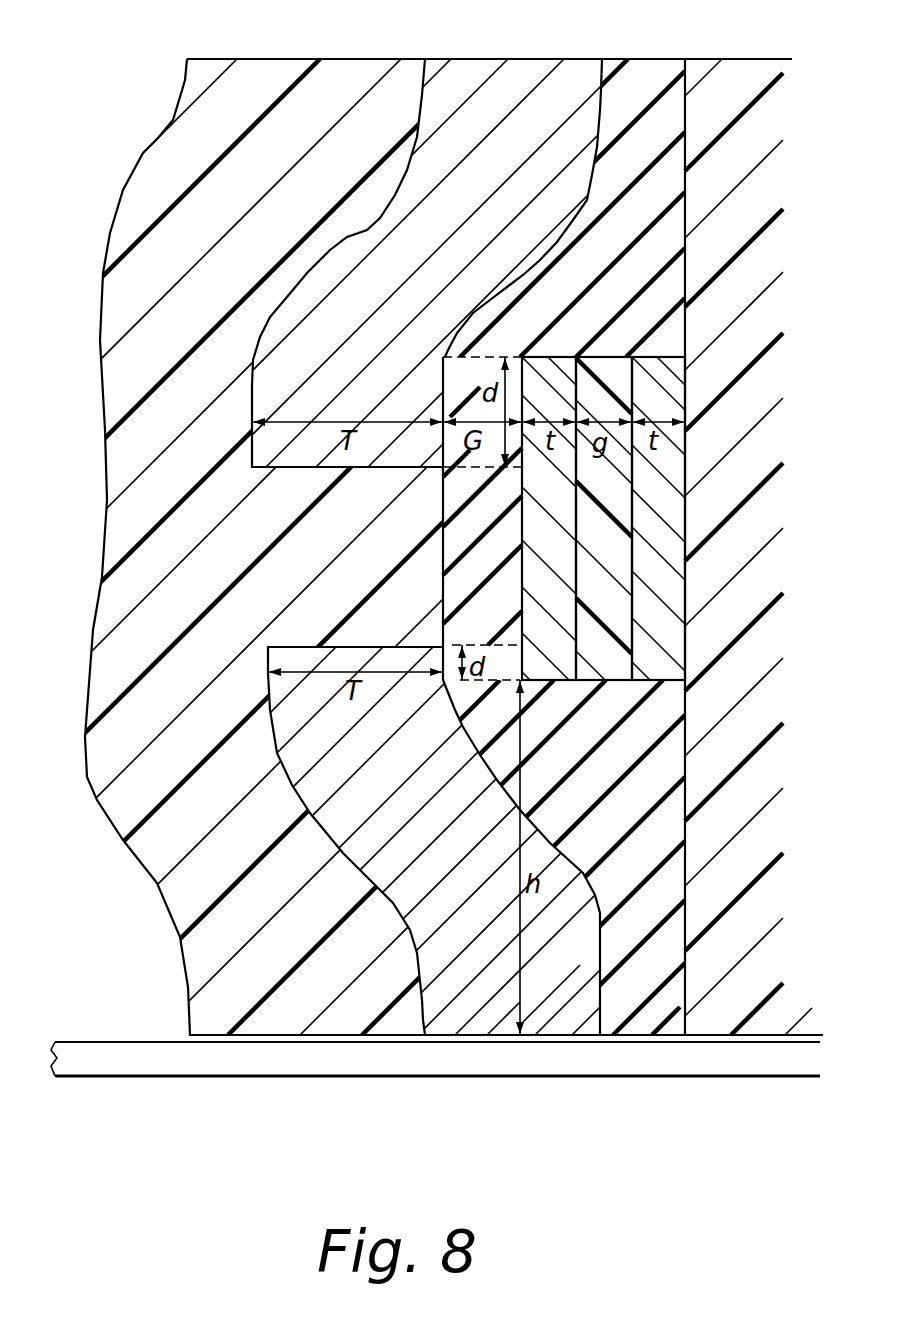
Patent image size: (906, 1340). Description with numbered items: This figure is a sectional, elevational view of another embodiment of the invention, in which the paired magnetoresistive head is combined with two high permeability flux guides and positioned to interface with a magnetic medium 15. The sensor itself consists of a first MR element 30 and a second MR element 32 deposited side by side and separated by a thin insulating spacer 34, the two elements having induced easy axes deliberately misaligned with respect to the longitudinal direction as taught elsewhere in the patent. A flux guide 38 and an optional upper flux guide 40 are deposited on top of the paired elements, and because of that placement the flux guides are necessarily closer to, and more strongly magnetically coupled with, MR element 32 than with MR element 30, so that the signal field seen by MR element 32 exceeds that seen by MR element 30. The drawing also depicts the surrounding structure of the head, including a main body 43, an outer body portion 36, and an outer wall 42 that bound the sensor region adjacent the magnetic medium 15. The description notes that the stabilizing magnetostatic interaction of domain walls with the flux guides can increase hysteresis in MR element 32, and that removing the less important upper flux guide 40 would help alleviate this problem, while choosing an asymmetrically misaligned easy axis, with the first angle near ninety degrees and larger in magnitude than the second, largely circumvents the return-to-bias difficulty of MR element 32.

The magnetic medium 15 is at (160, 1076).
The MR element 30 is at (652, 683).
The MR element 32 is at (545, 683).
The insulating spacer 34 is at (595, 683).
The outer body portion 36 is at (647, 1035).
The flux guide 38 is at (478, 1035).
The upper flux guide 40 is at (500, 82).
The outer wall 42 is at (755, 1035).
The main body 43 is at (320, 1023).